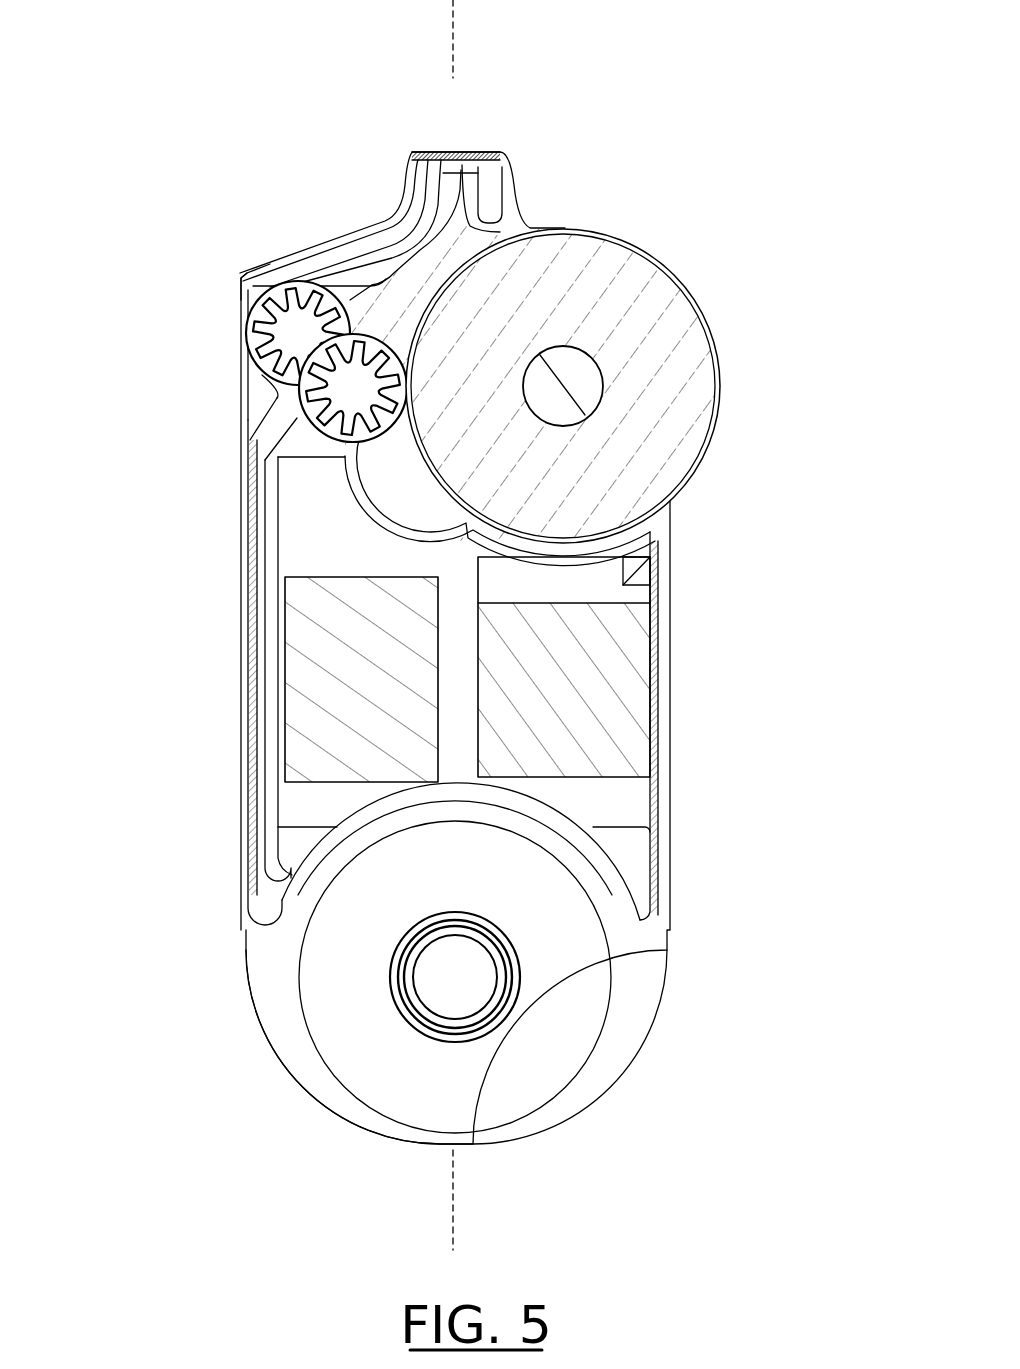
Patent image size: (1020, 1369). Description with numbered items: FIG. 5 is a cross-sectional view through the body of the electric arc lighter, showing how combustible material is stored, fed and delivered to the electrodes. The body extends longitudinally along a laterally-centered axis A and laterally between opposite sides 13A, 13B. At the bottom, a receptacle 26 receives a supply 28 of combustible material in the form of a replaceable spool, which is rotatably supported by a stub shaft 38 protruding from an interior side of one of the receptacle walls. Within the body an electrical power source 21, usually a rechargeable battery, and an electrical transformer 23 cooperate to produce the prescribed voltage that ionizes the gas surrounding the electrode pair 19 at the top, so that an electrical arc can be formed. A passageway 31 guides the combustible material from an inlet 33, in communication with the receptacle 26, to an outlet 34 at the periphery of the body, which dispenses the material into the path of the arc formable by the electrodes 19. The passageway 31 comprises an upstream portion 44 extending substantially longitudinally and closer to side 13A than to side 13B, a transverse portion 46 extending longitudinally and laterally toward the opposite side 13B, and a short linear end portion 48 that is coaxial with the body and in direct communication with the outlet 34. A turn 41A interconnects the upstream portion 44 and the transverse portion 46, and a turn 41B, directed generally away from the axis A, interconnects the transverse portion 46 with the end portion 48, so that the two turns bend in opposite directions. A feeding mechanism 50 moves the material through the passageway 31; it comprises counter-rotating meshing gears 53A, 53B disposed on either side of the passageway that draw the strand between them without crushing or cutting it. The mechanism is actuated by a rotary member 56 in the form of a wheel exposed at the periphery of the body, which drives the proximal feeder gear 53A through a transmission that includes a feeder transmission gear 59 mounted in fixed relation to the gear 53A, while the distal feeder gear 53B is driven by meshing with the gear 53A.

The axis A is at (453, 37).
The side 13A is at (232, 393).
The side 13B is at (680, 885).
The electrode pair 19 is at (476, 146).
The electrical power source 21 is at (627, 697).
The electrical transformer 23 is at (353, 733).
The receptacle 26 is at (628, 1005).
The supply of combustible material 28 is at (590, 1060).
The passageway 31 is at (238, 855).
The inlet 33 is at (272, 912).
The outlet 34 is at (448, 145).
The stub shaft 38 is at (465, 973).
The turn 41A is at (238, 428).
The turn 41B is at (410, 250).
The upstream portion 44 is at (225, 465).
The transverse portion 46 is at (360, 292).
The end portion 48 is at (478, 190).
The feeding mechanism 50 is at (240, 275).
The material-engaging member 53A is at (362, 389).
The material-engaging member 53B is at (298, 333).
The rotary member 56 is at (712, 385).
The transmission gear 59 is at (272, 402).